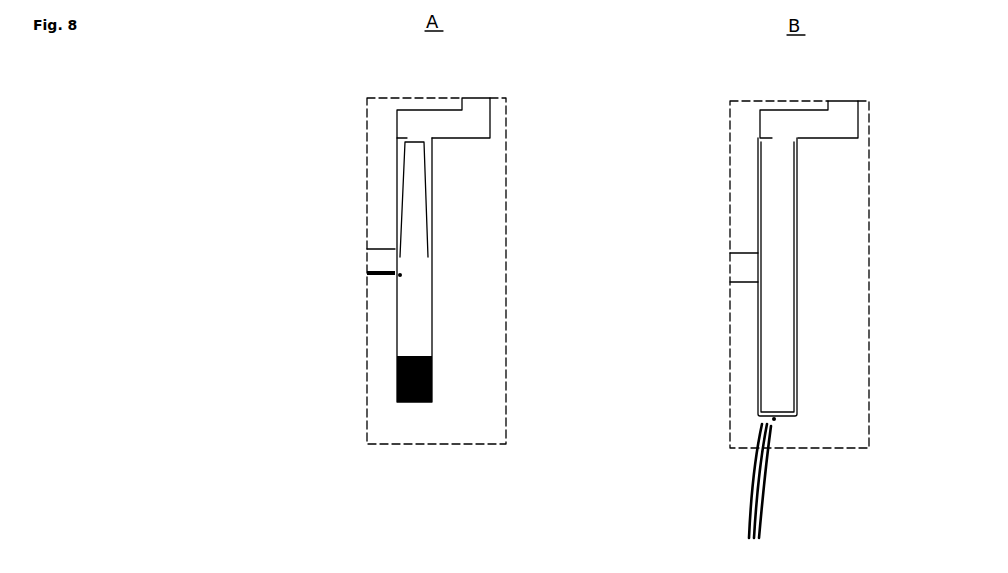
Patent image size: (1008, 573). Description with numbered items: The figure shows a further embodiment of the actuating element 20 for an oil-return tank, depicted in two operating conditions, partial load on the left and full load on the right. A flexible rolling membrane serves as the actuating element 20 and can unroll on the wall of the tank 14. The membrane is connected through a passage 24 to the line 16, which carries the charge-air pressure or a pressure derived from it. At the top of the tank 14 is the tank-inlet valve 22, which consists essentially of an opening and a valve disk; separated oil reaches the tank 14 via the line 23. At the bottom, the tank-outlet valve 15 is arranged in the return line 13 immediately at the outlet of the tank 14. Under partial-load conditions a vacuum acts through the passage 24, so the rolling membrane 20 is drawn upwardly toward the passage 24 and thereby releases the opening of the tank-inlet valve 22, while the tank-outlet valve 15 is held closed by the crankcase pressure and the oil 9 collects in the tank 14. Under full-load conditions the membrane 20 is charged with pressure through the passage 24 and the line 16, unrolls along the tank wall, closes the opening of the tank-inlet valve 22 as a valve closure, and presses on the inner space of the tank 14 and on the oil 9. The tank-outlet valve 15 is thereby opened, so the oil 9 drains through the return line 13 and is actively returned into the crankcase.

The oil 9 is at (366, 272).
The return line 13 is at (762, 513).
The tank 14 is at (433, 327).
The tank-outlet valve 15 is at (415, 407).
The line 16 is at (474, 100).
The actuating element 20 is at (425, 188).
The tank-inlet valve 22 is at (392, 265).
The line 23 is at (367, 250).
The passage 24 is at (418, 136).